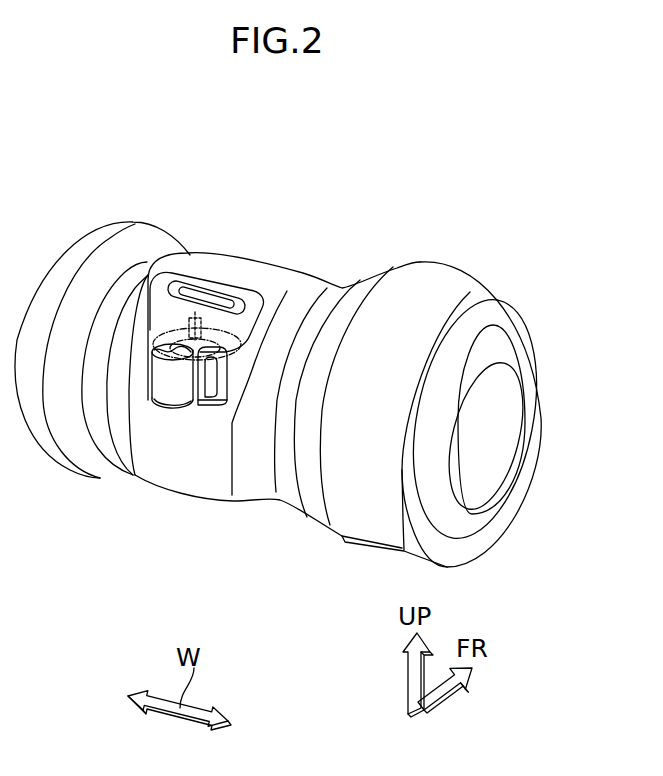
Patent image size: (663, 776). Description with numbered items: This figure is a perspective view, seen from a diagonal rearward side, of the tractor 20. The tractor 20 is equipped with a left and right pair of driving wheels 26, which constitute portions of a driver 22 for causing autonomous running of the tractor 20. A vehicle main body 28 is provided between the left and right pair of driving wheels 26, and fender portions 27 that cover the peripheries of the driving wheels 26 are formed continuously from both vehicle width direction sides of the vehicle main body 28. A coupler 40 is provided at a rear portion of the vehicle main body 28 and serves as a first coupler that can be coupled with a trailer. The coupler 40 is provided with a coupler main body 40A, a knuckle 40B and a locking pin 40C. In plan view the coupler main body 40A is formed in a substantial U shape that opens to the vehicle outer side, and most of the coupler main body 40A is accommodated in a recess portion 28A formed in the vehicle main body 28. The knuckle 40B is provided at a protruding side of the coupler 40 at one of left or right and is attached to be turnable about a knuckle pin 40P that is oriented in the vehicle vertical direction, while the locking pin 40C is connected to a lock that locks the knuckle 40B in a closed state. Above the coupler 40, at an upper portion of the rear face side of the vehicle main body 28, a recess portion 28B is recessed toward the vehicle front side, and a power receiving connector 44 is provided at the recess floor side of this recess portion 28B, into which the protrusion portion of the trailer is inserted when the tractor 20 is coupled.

The tractor 20 is at (424, 197).
The driver 22 is at (545, 448).
The driving wheels 26 is at (109, 481).
The fender portions 27 is at (88, 238).
The vehicle main body 28 is at (250, 243).
The recess portion 28A is at (197, 405).
The recess portion 28B is at (205, 294).
The coupler 40 is at (155, 379).
The coupler main body 40A is at (236, 349).
The knuckle 40B is at (164, 405).
The locking pin 40C is at (260, 303).
The knuckle pin 40P is at (162, 352).
The power receiving connector 44 is at (192, 318).